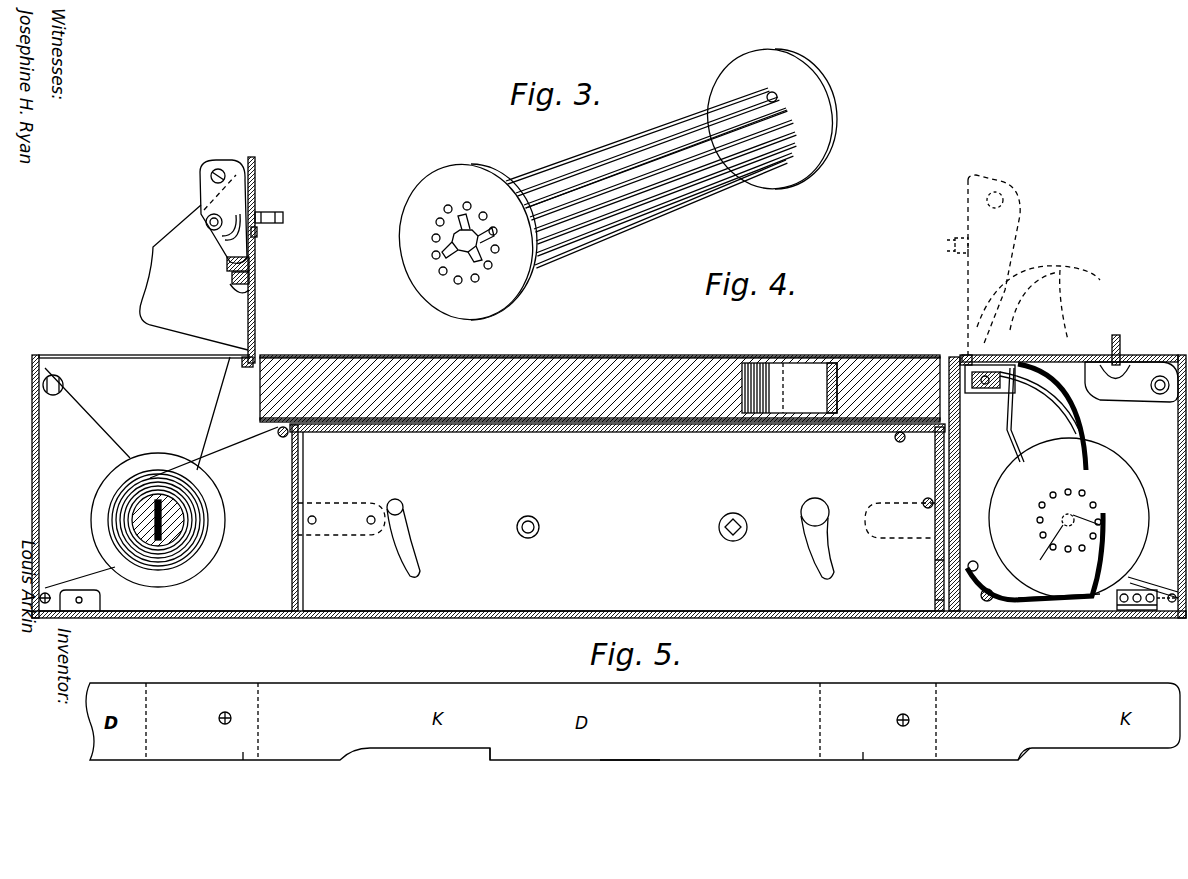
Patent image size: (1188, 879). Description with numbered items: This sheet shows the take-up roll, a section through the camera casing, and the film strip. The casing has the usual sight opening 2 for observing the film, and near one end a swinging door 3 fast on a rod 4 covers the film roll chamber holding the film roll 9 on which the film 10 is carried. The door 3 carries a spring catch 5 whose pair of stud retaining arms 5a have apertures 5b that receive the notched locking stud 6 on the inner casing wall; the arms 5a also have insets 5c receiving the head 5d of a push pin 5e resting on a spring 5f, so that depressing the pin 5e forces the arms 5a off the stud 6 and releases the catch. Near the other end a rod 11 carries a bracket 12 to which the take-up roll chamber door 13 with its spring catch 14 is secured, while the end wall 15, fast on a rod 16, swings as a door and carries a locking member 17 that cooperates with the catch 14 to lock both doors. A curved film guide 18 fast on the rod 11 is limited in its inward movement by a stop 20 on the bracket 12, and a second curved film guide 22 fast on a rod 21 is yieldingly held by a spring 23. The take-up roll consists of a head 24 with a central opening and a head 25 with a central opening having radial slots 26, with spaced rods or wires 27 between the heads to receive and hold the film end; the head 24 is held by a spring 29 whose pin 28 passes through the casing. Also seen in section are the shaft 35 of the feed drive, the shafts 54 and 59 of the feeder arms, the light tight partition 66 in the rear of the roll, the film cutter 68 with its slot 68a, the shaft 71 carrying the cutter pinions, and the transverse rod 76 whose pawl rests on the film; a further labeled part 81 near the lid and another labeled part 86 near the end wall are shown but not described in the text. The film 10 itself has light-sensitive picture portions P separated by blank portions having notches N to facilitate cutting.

In FIG. 4, the sight opening 2 is at (796, 357).
In FIG. 4, the swinging door 3 is at (256, 314).
In FIG. 4, the rod 4 is at (245, 368).
In FIG. 3, the spring catch 5 is at (690, 118).
In FIG. 4, the spring catch 5 is at (257, 211).
In FIG. 4, the stud retaining arms 5a is at (201, 174).
In FIG. 4, the apertures 5b is at (220, 169).
In FIG. 4, the insets 5c is at (208, 221).
In FIG. 4, the head 5d is at (258, 234).
In FIG. 4, the push pin 5e is at (283, 216).
In FIG. 4, the spring 5f is at (228, 241).
In FIG. 4, the locking member or stud 6 is at (63, 384).
In FIG. 4, the film roll 9 is at (212, 557).
In FIG. 5, the film 10 is at (627, 762).
In FIG. 4, the rod 11 is at (963, 356).
In FIG. 4, the bracket 12 is at (976, 394).
In FIG. 4, the door or cover 13 is at (1112, 356).
In FIG. 4, the spring catch 14 is at (1156, 360).
In FIG. 4, the end wall 15 is at (1178, 538).
In FIG. 4, the rod 16 is at (1172, 605).
In FIG. 4, the locking member 17 is at (1158, 396).
In FIG. 4, the curved film guide 18 is at (1082, 400).
In FIG. 4, the stop 20 is at (1064, 404).
In FIG. 4, the rod 21 is at (982, 601).
In FIG. 4, the curved film guide 22 is at (1012, 606).
In FIG. 4, the spring 23 is at (1085, 602).
In FIG. 3, the head 24 is at (830, 116).
In FIG. 4, the head 24 is at (1122, 478).
In FIG. 3, the head 25 is at (528, 279).
In FIG. 3, the radial slots 26 is at (456, 256).
In FIG. 3, the rods or wires 27 is at (700, 190).
In FIG. 4, the rods or wires 27 is at (1052, 492).
In FIG. 4, the pin 28 is at (1064, 526).
In FIG. 4, the spring 29 is at (975, 548).
In FIG. 4, the shaft 35 is at (814, 505).
In FIG. 4, the shaft 54 is at (730, 514).
In FIG. 4, the shaft 59 is at (535, 535).
In FIG. 4, the light tight frame or partition 66 is at (935, 579).
In FIG. 4, the film separator or cutter 68 is at (935, 465).
In FIG. 4, the slot 68a is at (937, 405).
In FIG. 4, the shaft 71 is at (924, 506).
In FIG. 4, the transverse rod 76 is at (895, 440).
In FIG. 4, the screw 81 is at (286, 440).
In FIG. 4, the bracket 86 is at (1145, 613).
In FIG. 5, the light-sensitive portions P is at (243, 752).
In FIG. 5, the notches N is at (487, 762).